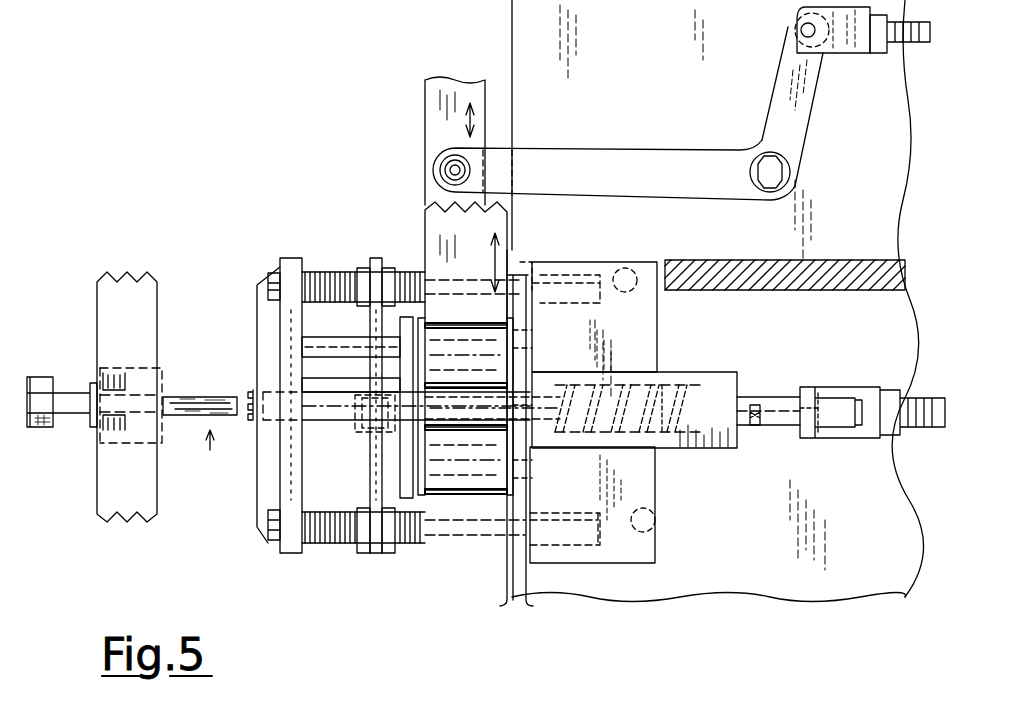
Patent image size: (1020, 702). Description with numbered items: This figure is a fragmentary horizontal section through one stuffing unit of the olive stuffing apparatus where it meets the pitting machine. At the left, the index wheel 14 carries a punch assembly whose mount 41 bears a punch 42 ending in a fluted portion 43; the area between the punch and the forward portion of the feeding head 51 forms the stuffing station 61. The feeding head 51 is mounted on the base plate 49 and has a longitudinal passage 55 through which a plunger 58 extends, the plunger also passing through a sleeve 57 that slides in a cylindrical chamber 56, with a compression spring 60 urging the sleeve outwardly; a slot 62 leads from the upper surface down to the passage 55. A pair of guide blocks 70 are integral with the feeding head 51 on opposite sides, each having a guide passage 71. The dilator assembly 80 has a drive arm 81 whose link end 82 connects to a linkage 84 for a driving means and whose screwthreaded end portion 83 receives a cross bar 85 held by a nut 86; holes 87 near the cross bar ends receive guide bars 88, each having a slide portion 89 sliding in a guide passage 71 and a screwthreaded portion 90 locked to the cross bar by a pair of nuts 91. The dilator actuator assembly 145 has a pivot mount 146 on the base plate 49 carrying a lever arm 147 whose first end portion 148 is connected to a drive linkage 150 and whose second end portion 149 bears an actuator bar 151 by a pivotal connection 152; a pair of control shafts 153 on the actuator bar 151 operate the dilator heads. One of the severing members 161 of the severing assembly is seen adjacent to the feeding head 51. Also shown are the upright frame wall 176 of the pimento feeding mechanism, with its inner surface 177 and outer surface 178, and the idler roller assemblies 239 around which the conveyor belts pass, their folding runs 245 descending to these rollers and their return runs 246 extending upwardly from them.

The index wheel 14 is at (136, 330).
The mount 41 is at (52, 432).
The punch 42 is at (70, 397).
The fluted portion 43 is at (212, 397).
The stuffing station 61 is at (210, 455).
The dilator assembly 80 is at (271, 261).
The screwthreaded portion 90 is at (306, 270).
The nuts 91 is at (360, 272).
The holes 87 is at (372, 275).
The control shafts 153 is at (346, 345).
The nut 86 is at (358, 383).
The sleeve 57 is at (318, 425).
The screwthreaded end portion 83 is at (366, 432).
The cross bar 85 is at (398, 480).
The idler roller assemblies 239 is at (450, 335).
The severing members 161 is at (468, 250).
The actuator bar 151 is at (426, 104).
The pivotal connection 152 is at (450, 158).
The second end portion 149 is at (493, 150).
The lever arm 147 is at (662, 186).
The pivot mount 146 is at (778, 173).
The dilator actuator assembly 145 is at (709, 130).
The first end portion 148 is at (792, 52).
The drive linkage 150 is at (880, 55).
The base plate 49 is at (661, 55).
The guide bar 88 is at (517, 248).
The slide portion 89 is at (550, 288).
The guide blocks 70 is at (592, 262).
The guide passage 71 is at (627, 268).
The feeding head 51 is at (715, 372).
The cylindrical chamber 56 is at (688, 383).
The compression spring 60 is at (661, 380).
The plunger 58 is at (505, 380).
The slot 62 is at (495, 400).
The return runs 246 is at (515, 340).
The folding runs 245 is at (520, 445).
The linkage 84 is at (832, 387).
The drive arm 81 is at (772, 397).
The link end 82 is at (805, 420).
The passage 55 is at (742, 425).
The frame wall 176 is at (717, 258).
The inner surface 177 is at (862, 258).
The outer surface 178 is at (868, 292).